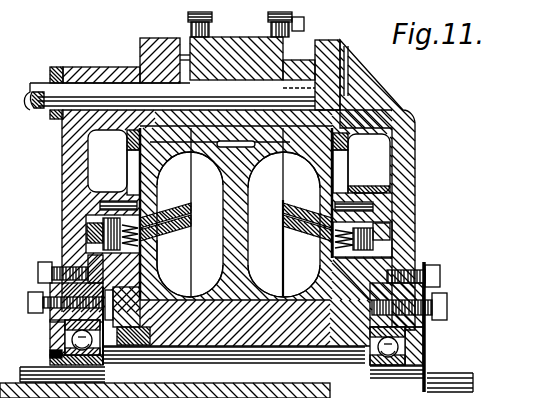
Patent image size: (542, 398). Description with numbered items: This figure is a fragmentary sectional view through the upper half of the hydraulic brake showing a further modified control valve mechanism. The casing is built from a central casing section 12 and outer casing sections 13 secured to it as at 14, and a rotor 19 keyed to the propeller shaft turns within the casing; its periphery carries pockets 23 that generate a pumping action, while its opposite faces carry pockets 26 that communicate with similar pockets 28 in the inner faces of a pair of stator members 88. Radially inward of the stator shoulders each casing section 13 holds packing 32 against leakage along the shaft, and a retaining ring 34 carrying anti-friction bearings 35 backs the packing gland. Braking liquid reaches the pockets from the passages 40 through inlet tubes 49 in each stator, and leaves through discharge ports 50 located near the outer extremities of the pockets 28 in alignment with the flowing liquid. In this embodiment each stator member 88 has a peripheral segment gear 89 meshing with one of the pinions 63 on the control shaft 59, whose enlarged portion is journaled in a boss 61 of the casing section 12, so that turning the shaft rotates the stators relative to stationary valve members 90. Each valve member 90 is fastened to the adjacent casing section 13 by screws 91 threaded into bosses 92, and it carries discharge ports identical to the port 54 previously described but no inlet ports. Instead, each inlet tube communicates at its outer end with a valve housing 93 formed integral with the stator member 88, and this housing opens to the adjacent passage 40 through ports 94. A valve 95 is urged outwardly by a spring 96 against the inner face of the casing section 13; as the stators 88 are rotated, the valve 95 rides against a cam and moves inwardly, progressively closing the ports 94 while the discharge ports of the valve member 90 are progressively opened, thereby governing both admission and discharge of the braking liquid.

The central casing section 12 is at (264, 214).
The outer casing section 13 is at (414, 179).
The securing means 14 is at (188, 21).
The rotor 19 is at (229, 208).
The peripheral pockets 23 is at (231, 146).
The rotor pockets 26 is at (188, 239).
The stator pockets 28 is at (292, 253).
The packing 32 is at (147, 348).
The retaining ring 34 is at (70, 336).
The anti-friction bearings 35 is at (50, 353).
The passages 40 is at (415, 152).
The inlet tubes 49 is at (296, 227).
The discharge ports 50 is at (302, 160).
The port 54 is at (136, 170).
The shaft 59 is at (42, 104).
The boss 61 is at (233, 50).
The pinions 63 is at (146, 66).
The stator members 88 is at (238, 281).
The peripheral segment gear 89 is at (128, 137).
The stationary valve member 90 is at (239, 161).
The screws 91 is at (369, 182).
The bosses 92 is at (392, 212).
The valve housing 93 is at (100, 206).
The ports 94 is at (128, 250).
The valve 95 is at (104, 231).
The spring 96 is at (100, 249).